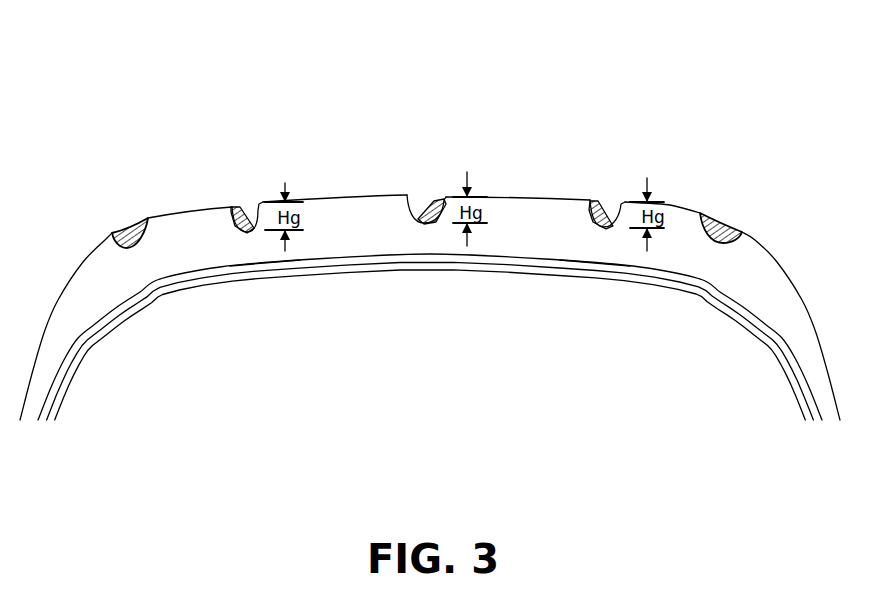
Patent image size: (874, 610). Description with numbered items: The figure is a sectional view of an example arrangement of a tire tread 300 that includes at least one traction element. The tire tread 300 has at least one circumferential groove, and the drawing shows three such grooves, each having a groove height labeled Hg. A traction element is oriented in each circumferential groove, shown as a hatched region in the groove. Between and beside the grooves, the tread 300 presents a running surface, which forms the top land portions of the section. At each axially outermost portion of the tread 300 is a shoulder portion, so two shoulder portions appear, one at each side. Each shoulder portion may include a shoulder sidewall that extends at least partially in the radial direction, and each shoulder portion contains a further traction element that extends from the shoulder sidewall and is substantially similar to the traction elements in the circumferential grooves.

The tire tread 300 is at (142, 111).